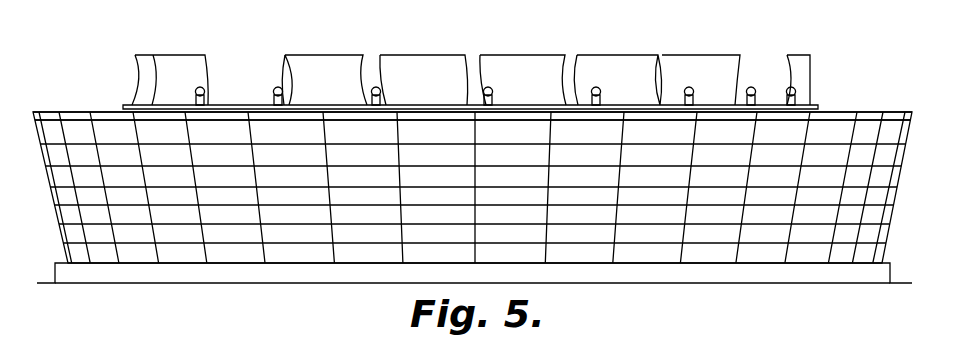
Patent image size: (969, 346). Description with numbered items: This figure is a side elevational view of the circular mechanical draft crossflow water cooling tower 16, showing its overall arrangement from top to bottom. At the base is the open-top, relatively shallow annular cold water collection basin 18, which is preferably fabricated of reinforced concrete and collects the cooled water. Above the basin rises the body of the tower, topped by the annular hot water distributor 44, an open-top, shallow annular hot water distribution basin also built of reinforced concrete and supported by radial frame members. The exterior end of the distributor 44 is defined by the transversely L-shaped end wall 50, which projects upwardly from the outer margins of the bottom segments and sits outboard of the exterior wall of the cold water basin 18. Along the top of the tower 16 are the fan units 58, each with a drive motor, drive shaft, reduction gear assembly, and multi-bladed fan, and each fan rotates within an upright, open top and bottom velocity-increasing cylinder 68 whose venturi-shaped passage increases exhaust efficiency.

The circular tower 16 is at (40, 110).
The annular hot water distributor 44 is at (85, 113).
The end wall 50 is at (845, 112).
The cold water collection basin 18 is at (295, 268).
The velocity-increasing cylinder 68 is at (505, 68).
The fan unit 58 is at (547, 52).